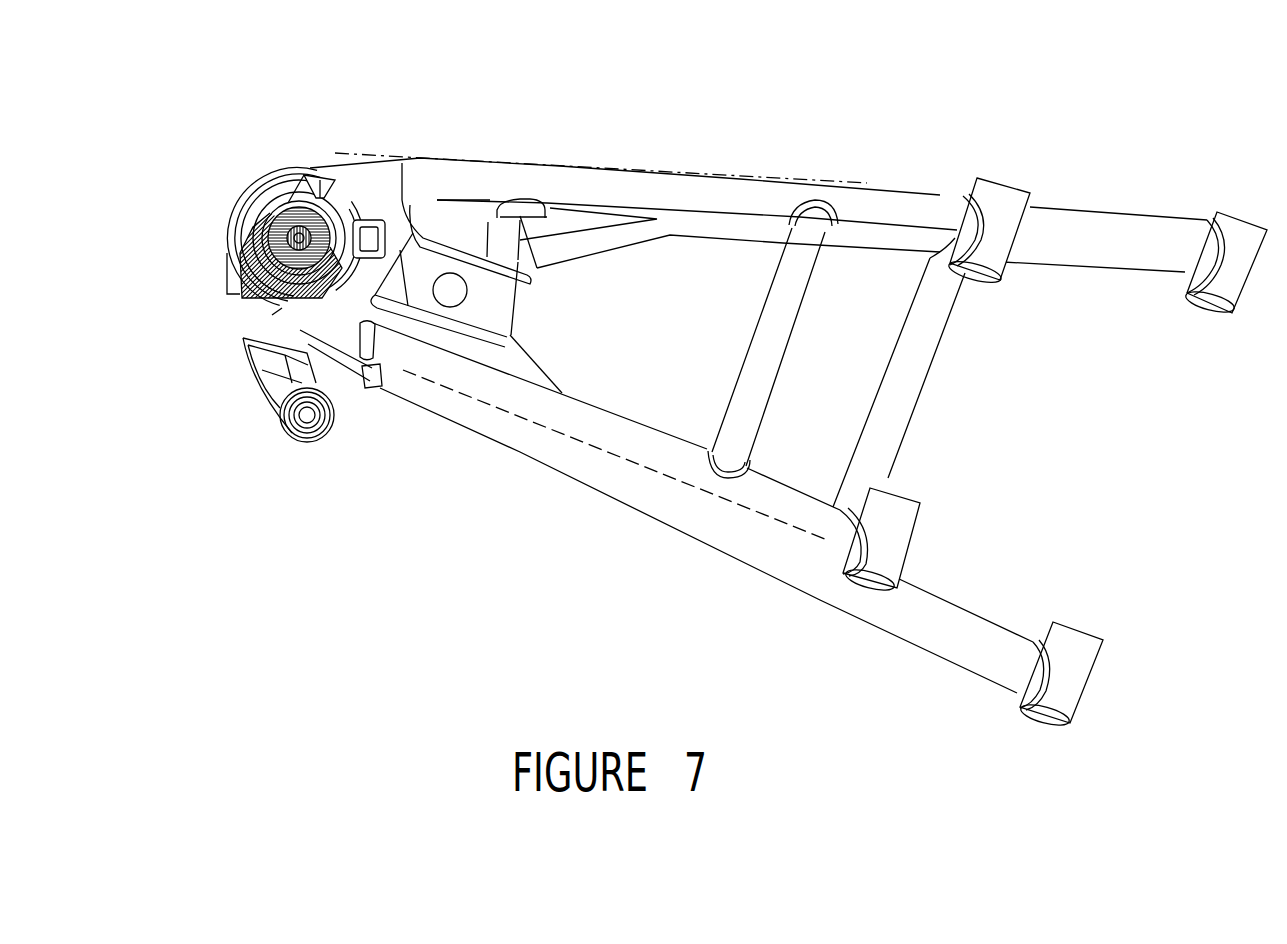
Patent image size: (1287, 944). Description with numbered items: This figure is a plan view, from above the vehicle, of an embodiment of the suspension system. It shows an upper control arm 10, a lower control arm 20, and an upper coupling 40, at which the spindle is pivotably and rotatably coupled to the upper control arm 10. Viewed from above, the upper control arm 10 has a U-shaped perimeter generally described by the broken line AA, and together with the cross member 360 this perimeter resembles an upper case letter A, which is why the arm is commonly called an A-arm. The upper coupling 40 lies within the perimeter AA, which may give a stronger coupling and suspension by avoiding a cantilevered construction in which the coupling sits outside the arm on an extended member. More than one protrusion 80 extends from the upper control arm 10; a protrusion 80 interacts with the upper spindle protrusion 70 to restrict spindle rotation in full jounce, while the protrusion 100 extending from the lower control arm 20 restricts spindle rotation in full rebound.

The upper control arm 10 is at (897, 203).
The lower control arm 20 is at (1085, 237).
The upper coupling 40 is at (260, 167).
The upper spindle protrusion 70 is at (400, 202).
The protrusion 80 is at (305, 175).
The protrusion 100 is at (379, 239).
The cross member 360 is at (768, 345).
The broken line AA is at (737, 173).